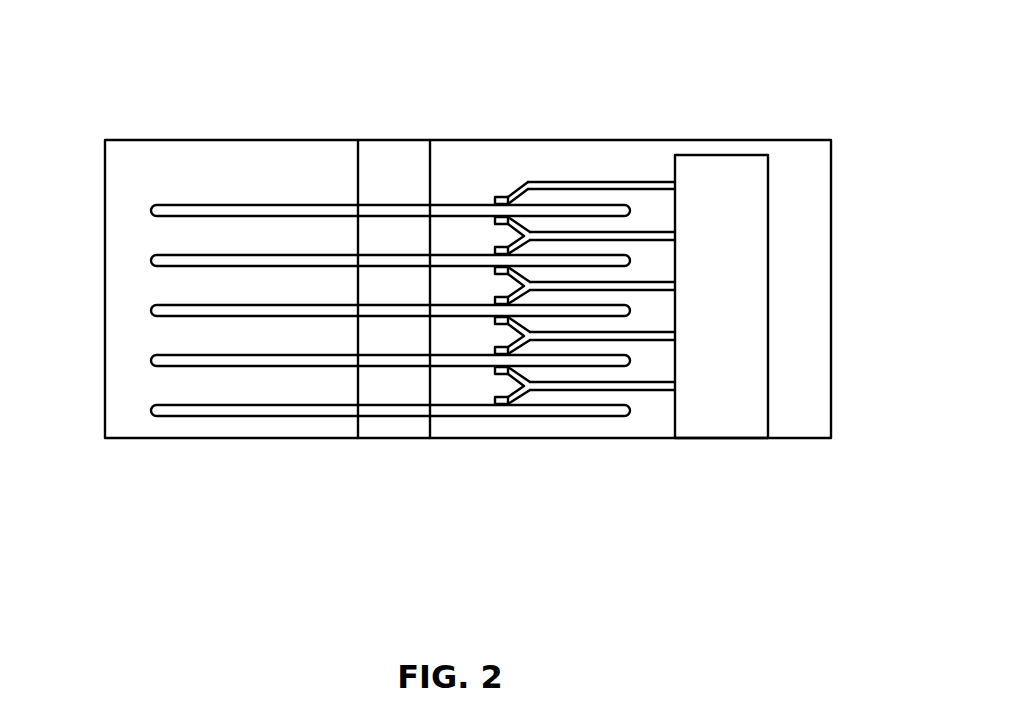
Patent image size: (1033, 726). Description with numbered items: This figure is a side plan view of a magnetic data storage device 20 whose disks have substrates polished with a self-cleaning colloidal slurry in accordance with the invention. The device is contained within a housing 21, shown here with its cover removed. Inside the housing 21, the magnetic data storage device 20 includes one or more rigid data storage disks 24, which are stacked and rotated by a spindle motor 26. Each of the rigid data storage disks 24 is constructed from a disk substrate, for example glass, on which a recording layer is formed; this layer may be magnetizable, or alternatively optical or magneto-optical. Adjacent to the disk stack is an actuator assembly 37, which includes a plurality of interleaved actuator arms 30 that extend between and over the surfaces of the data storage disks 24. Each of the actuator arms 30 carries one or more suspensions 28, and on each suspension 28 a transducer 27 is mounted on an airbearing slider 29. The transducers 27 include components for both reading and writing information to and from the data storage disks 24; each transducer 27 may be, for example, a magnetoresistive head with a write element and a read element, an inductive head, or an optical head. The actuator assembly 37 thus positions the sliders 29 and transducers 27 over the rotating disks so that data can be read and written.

The magnetic data storage device 20 is at (727, 114).
The housing 21 is at (832, 323).
The rigid data storage disks 24 is at (151, 208).
The spindle motor 26 is at (386, 432).
The transducers 27 is at (498, 204).
The suspensions 28 is at (509, 200).
The airbearing sliders 29 is at (505, 199).
The actuator arms 30 is at (585, 181).
The actuator assembly 37 is at (720, 412).